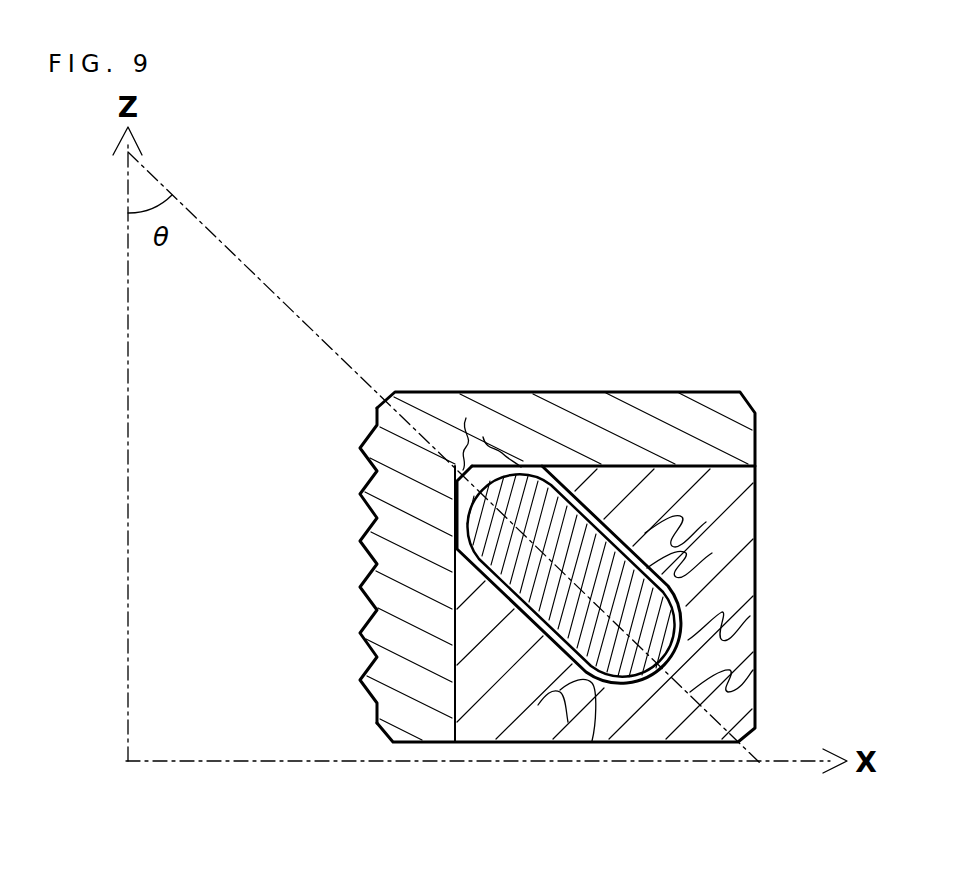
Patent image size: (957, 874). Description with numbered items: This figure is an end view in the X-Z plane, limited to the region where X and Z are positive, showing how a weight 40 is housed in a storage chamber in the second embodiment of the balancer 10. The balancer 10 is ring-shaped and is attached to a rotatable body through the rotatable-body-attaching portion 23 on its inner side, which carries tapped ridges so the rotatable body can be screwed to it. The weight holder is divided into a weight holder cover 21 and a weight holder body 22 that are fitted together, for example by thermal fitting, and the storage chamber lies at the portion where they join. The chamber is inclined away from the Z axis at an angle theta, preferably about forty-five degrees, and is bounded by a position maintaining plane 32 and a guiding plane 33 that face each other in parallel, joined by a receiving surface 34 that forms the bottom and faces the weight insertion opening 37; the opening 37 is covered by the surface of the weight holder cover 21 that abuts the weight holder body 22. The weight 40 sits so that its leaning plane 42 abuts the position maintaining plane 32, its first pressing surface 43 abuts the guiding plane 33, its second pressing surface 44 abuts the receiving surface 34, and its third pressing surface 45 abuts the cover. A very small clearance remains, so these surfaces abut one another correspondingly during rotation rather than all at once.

The balancer 10 is at (601, 373).
The weight holder cover 21 is at (540, 446).
The weight holder body 22 is at (505, 682).
The rotatable-body-attaching portion 23 is at (362, 488).
The weight 40 is at (577, 577).
The weight insertion opening 37 is at (475, 455).
The third pressing surface 45 is at (509, 462).
The guiding plane 33 is at (740, 520).
The first pressing surface 43 is at (730, 548).
The second pressing surface 44 is at (722, 633).
The receiving surface 34 is at (716, 680).
The position maintaining plane 32 is at (565, 705).
The leaning plane 42 is at (597, 700).